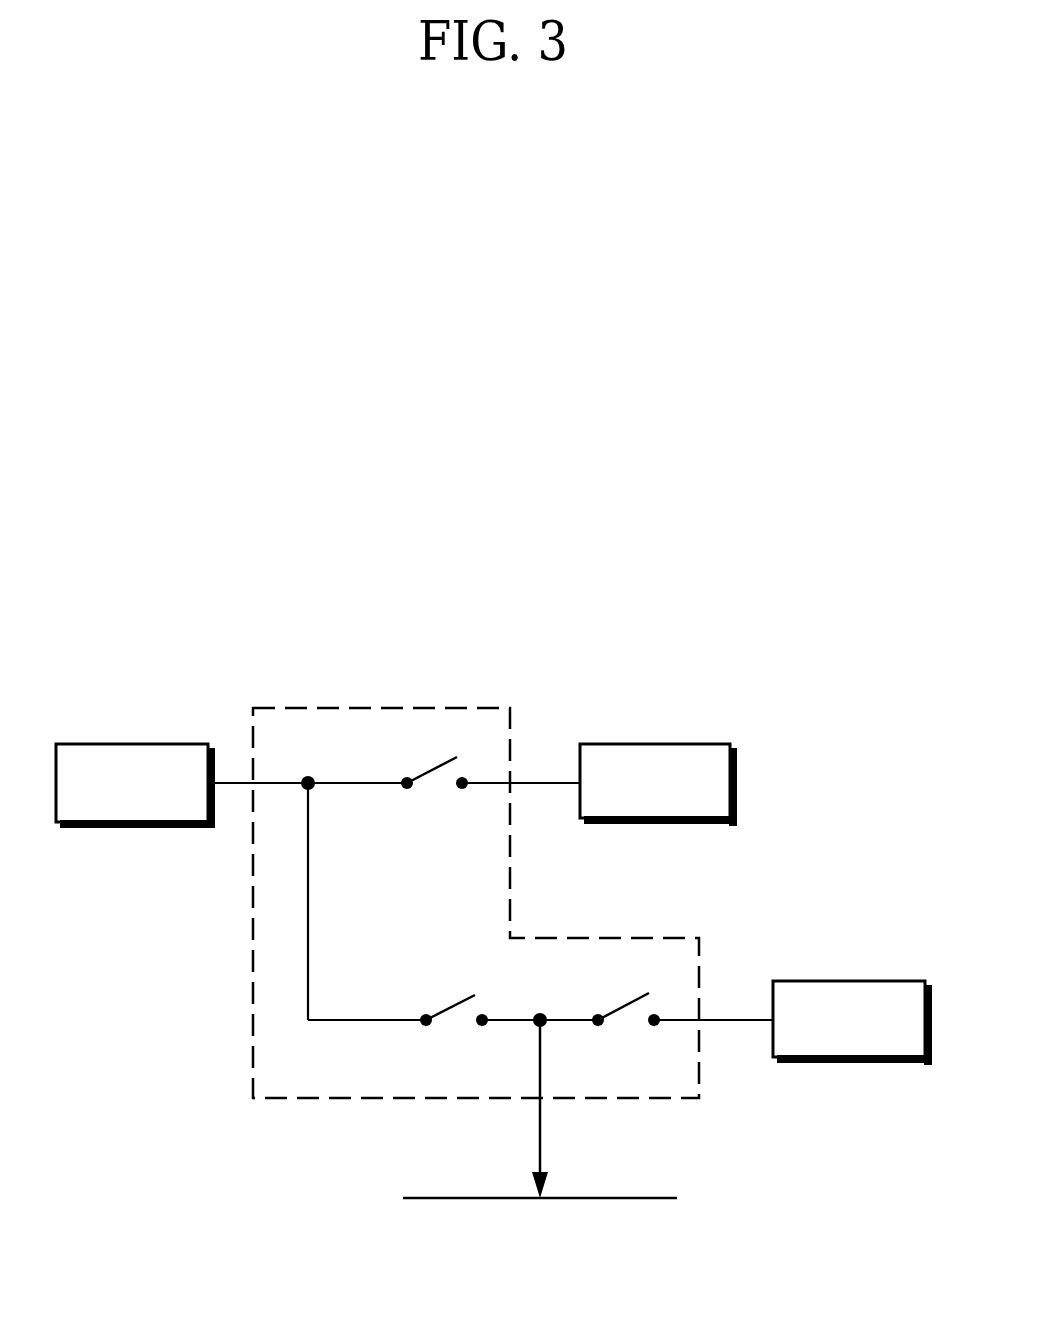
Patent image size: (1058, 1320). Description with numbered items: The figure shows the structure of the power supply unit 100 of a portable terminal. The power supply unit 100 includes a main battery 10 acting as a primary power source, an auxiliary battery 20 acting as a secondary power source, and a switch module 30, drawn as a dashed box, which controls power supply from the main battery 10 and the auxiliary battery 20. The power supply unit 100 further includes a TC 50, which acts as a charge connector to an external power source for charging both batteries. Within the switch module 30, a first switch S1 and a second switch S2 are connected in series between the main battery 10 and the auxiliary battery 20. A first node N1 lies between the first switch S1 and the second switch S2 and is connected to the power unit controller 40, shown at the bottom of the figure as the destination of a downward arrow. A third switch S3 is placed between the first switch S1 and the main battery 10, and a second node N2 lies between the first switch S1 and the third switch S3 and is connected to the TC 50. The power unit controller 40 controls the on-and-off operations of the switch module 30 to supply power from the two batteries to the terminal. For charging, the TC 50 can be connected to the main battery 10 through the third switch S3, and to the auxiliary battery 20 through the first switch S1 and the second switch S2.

The power supply unit 100 is at (236, 544).
The main battery VBAT 10 is at (694, 742).
The auxiliary battery SBAT 20 is at (889, 980).
The switch module 30 is at (420, 706).
The power unit controller 40 is at (541, 1155).
The TC 50 is at (172, 742).
The first node N1 is at (539, 1002).
The second node N2 is at (311, 763).
The first switch S1 is at (454, 1033).
The second switch S2 is at (626, 1032).
The third switch S3 is at (434, 796).